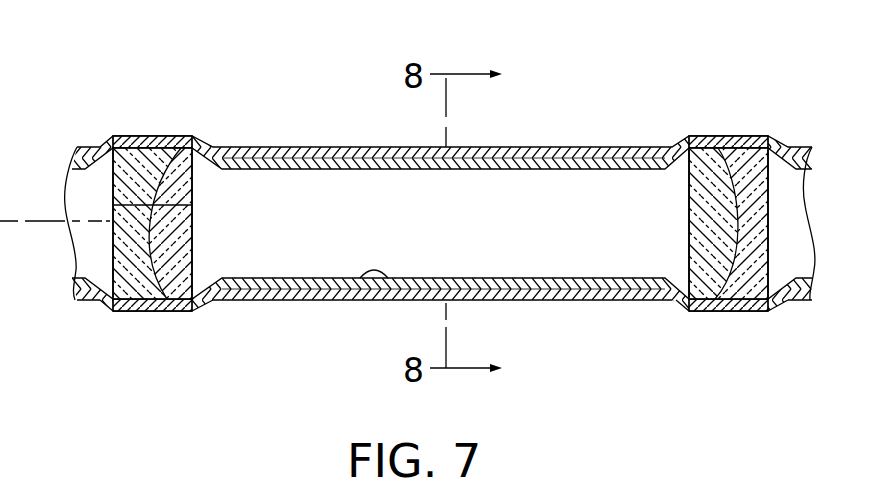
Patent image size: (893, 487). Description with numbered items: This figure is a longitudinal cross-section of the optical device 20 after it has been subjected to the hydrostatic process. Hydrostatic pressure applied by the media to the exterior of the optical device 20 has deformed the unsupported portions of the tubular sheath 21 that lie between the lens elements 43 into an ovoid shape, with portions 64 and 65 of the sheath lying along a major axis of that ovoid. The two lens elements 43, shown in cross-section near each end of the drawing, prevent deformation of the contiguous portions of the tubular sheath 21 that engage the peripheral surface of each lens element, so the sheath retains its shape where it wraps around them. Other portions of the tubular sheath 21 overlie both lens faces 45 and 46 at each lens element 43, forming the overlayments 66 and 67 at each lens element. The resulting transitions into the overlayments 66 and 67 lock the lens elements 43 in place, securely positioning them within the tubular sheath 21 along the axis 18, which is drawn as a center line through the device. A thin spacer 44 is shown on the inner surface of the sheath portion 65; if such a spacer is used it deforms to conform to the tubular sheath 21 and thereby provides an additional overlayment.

The axis 18 is at (26, 220).
The optical device 20 is at (425, 205).
The tubular sheath 21 is at (441, 242).
The lens elements 43 is at (180, 172).
The spacer 44 is at (355, 282).
The lens face 45 is at (113, 242).
The lens face 46 is at (192, 225).
The portion of tubular sheath 64 is at (385, 146).
The portion of tubular sheath 65 is at (493, 300).
The overlayment 66 is at (104, 330).
The overlayment 67 is at (204, 327).